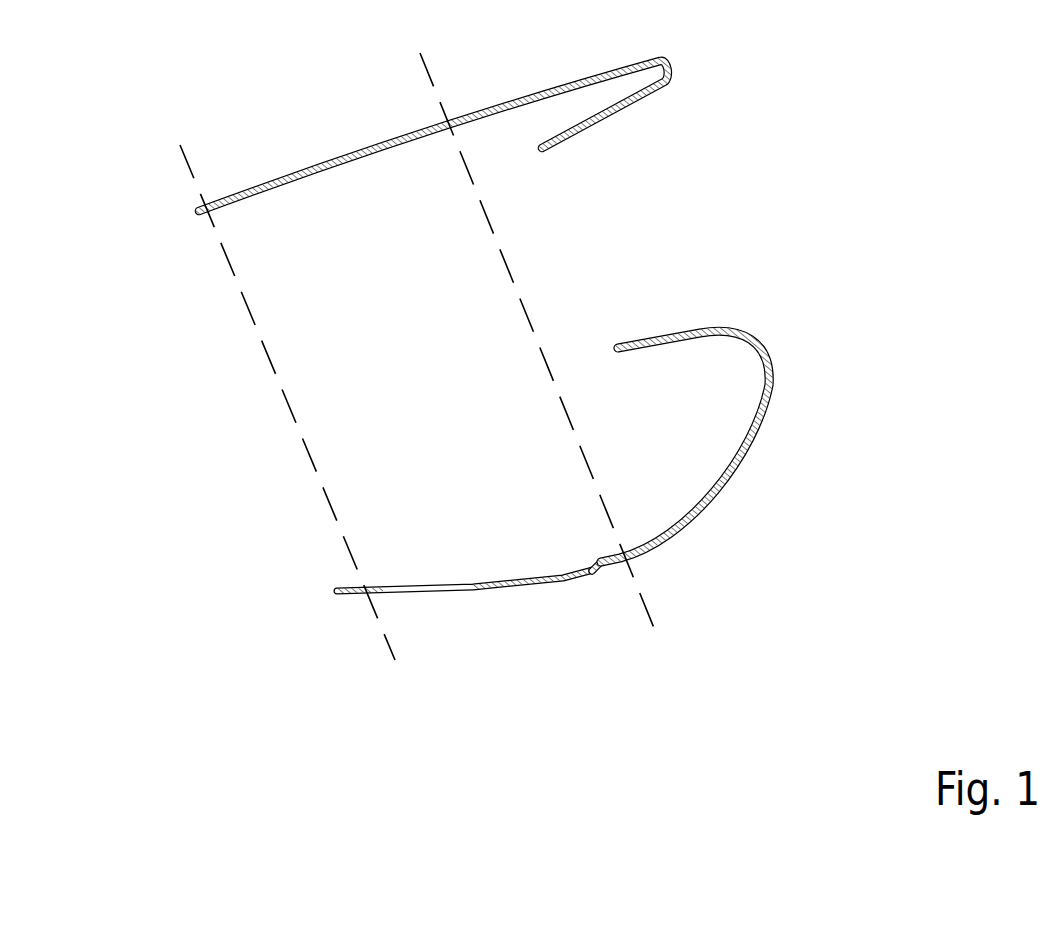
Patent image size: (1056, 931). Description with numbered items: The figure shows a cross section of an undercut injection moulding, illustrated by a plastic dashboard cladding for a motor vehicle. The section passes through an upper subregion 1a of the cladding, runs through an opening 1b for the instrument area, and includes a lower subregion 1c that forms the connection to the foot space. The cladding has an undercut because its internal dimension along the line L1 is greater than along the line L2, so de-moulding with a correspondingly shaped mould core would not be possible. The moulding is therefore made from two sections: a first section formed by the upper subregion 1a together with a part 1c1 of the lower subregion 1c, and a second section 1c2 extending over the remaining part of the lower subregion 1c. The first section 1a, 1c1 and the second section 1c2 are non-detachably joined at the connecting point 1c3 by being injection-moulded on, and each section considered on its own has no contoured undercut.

The upper subregion 1a is at (551, 88).
The opening 1b is at (600, 244).
The lower subregion 1c is at (578, 509).
The part of the lower subregion 1c1 is at (743, 468).
The second section 1c2 is at (490, 593).
The connecting point 1c3 is at (645, 553).
The line L1 is at (420, 55).
The line L2 is at (184, 148).